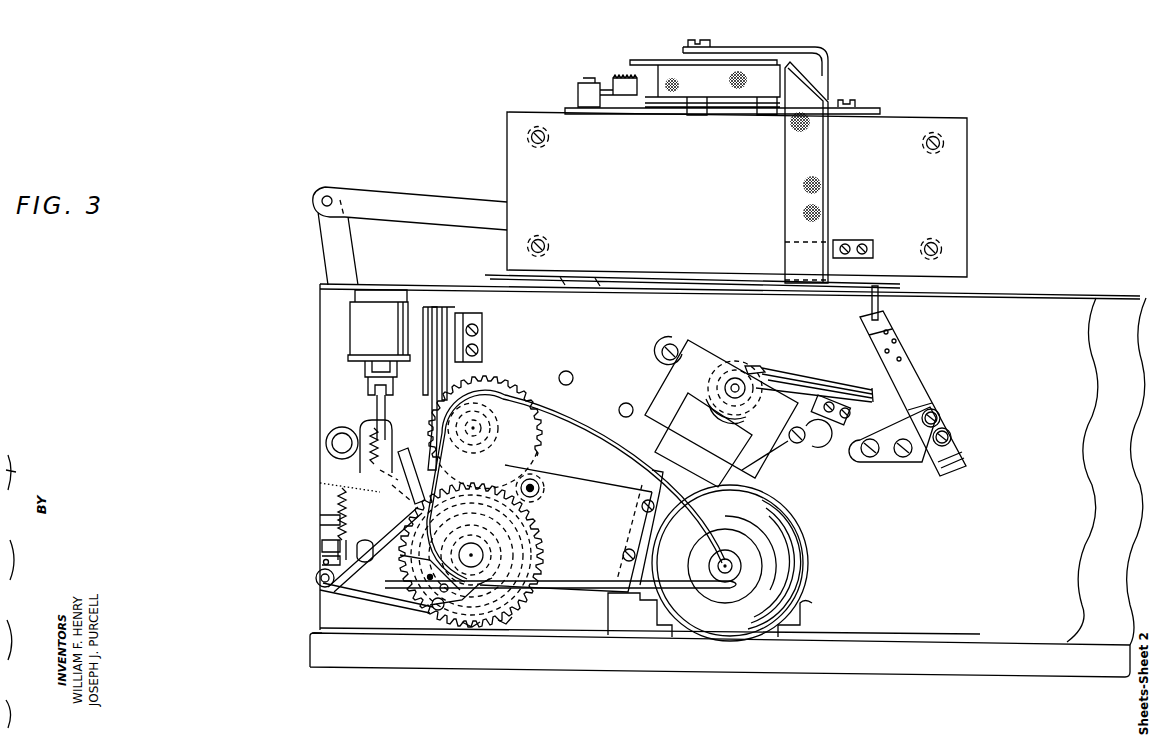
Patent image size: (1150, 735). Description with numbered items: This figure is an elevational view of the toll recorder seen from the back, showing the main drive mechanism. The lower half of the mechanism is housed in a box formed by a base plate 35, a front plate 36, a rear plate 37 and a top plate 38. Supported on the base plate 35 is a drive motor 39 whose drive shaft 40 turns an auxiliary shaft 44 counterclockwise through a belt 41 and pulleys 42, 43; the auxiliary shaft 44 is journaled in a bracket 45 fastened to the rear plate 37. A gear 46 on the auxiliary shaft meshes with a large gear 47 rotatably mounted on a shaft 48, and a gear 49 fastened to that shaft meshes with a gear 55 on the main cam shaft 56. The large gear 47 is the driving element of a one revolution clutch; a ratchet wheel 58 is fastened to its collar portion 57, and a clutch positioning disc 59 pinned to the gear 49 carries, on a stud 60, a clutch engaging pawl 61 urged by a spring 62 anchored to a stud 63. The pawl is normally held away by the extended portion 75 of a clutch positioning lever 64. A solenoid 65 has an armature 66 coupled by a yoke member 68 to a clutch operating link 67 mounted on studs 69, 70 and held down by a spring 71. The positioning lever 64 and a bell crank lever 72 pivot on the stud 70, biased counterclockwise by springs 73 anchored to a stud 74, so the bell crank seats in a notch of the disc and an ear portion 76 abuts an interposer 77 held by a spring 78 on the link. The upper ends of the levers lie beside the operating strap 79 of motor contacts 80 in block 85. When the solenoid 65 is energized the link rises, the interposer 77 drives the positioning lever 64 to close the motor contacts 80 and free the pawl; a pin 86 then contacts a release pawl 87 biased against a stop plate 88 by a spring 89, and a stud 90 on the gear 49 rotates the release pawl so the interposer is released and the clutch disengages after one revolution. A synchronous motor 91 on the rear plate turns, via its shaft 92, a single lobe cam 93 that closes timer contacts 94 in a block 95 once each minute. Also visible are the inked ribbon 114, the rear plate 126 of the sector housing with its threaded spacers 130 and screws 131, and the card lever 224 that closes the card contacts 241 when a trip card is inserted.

The base plate 35 is at (732, 670).
The front plate 36 is at (1085, 485).
The rear plate 37 is at (323, 389).
The top plate 38 is at (1058, 297).
The drive motor 39 is at (795, 520).
The drive shaft 40 is at (718, 566).
The belt 41 is at (590, 585).
The pulley 42 is at (578, 420).
The pulley 43 is at (742, 558).
The auxiliary shaft 44 is at (540, 492).
The bracket 45 is at (592, 484).
The gear 46 is at (538, 487).
The large gear 47 is at (528, 608).
The shaft 48 is at (485, 550).
The gear 49 is at (505, 622).
The gear 55 is at (498, 384).
The main cam shaft 56 is at (482, 428).
The collar portion 57 is at (498, 558).
The ratchet wheel 58 is at (492, 536).
The clutch positioning disc 59 is at (472, 624).
The stud 60 is at (444, 592).
The clutch engaging pawl 61 is at (462, 592).
The spring 62 is at (458, 532).
The stud 63 is at (462, 520).
The clutch positioning lever 64 is at (380, 570).
The solenoid 65 is at (356, 330).
The armature 66 is at (365, 370).
The clutch operating link 67 is at (358, 455).
The yoke member 68 is at (368, 385).
The stud 69 is at (378, 446).
The stud 70 is at (365, 540).
The spring 71 is at (384, 430).
The bell crank lever 72 is at (395, 590).
The springs 73 is at (405, 470).
The stud 74 is at (324, 480).
The extended portion 75 is at (432, 606).
The ear portion 76 is at (322, 533).
The interposer 77 is at (322, 558).
The spring 78 is at (333, 580).
The operating strap 79 is at (428, 418).
The motor contacts 80 is at (440, 422).
The block 85 is at (483, 318).
The pin 86 is at (322, 547).
The release pawl 87 is at (436, 517).
The stop plate 88 is at (335, 520).
The spring 89 is at (330, 495).
The stud 90 is at (430, 580).
The synchronous motor 91 is at (734, 368).
The shaft 92 is at (730, 385).
The single lobe cam 93 is at (748, 364).
The timer contacts 94 is at (760, 366).
The block 95 is at (848, 412).
The inked ribbon 114 is at (824, 160).
The rear plate 126 is at (507, 150).
The threaded spacers 130 is at (545, 148).
The screws 131 is at (546, 137).
The card lever 224 is at (879, 298).
The card contacts 241 is at (896, 330).